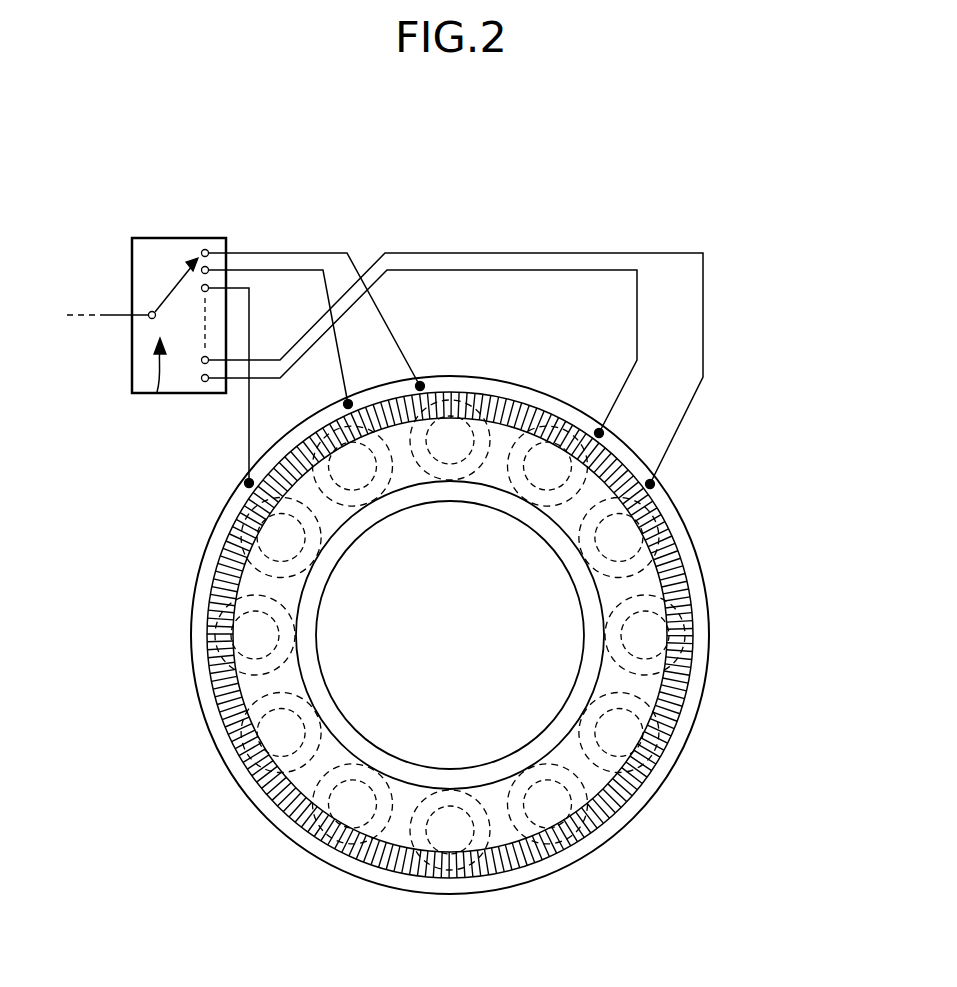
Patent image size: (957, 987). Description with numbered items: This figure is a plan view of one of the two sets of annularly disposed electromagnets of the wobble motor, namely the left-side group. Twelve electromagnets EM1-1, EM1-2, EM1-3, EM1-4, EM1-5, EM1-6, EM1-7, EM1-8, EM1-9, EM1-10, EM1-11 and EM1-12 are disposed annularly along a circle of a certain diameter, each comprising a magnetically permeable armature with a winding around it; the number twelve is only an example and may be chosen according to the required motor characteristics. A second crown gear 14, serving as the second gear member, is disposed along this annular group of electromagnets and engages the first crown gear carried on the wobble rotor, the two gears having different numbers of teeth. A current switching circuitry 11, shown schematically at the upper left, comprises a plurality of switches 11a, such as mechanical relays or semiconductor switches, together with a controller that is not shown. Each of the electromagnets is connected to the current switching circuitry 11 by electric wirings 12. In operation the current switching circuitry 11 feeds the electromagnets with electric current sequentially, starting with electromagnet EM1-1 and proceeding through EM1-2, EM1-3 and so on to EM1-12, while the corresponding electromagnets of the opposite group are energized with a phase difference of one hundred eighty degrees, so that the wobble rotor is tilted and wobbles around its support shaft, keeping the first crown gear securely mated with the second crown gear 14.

The current switching circuitry 11 is at (173, 237).
The switch 11a is at (155, 392).
The electric wirings 12 is at (270, 268).
The second crown gear 14 is at (686, 568).
The electromagnet EM1-1 is at (453, 378).
The electromagnet EM1-2 is at (310, 406).
The electromagnet EM1-3 is at (217, 505).
The electromagnet EM1-4 is at (187, 630).
The electromagnet EM1-5 is at (220, 747).
The electromagnet EM1-6 is at (308, 845).
The electromagnet EM1-7 is at (440, 887).
The electromagnet EM1-8 is at (590, 863).
The electromagnet EM1-9 is at (665, 763).
The electromagnet EM1-10 is at (710, 638).
The electromagnet EM1-11 is at (688, 497).
The electromagnet EM1-12 is at (575, 402).